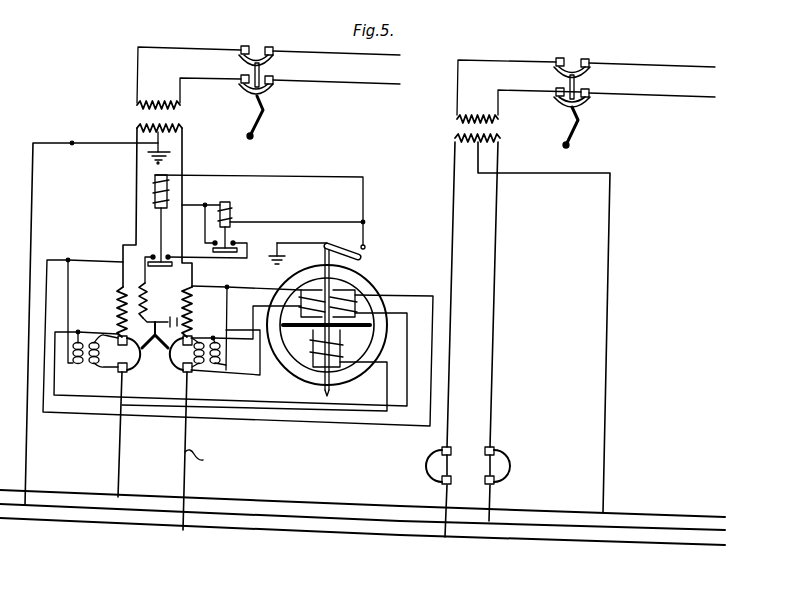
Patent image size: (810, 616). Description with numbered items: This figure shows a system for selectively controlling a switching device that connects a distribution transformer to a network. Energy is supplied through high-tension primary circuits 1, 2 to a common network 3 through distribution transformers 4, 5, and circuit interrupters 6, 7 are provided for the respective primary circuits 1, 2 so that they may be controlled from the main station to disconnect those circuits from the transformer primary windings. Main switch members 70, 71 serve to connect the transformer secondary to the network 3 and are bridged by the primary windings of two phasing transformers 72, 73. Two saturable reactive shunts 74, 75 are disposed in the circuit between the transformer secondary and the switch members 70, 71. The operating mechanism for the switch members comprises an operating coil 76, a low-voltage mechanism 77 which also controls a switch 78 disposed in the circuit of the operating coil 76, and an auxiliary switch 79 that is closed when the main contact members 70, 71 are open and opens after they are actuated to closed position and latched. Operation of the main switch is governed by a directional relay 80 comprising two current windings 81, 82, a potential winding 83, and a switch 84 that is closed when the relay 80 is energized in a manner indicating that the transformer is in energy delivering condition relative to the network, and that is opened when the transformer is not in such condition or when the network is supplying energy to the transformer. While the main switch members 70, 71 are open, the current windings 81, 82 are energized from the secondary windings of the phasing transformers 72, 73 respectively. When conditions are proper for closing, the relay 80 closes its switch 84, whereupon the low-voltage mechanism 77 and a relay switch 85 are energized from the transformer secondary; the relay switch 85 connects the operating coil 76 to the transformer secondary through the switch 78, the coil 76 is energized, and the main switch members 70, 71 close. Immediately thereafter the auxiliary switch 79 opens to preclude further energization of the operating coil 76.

The high-tension primary circuit 1 is at (316, 55).
The high-tension primary circuit 2 is at (653, 86).
The common network 3 is at (403, 505).
The distribution transformer 4 is at (183, 117).
The distribution transformer 5 is at (495, 128).
The circuit interrupter 6 is at (264, 70).
The circuit interrupter 7 is at (583, 83).
The main switch member 70 is at (124, 373).
The main switch member 71 is at (185, 373).
The phasing transformer 72 is at (93, 366).
The phasing transformer 73 is at (218, 368).
The saturable reactive shunt 74 is at (118, 303).
The saturable reactive shunt 75 is at (193, 302).
The operating coil 76 is at (147, 300).
The low-voltage mechanism 77 is at (155, 200).
The switch 78 is at (146, 262).
The auxiliary switch 79 is at (155, 350).
The directional relay 80 is at (341, 297).
The current winding 81 is at (358, 304).
The current winding 82 is at (311, 291).
The potential winding 83 is at (333, 366).
The switch 84 is at (329, 243).
The relay switch 85 is at (230, 210).